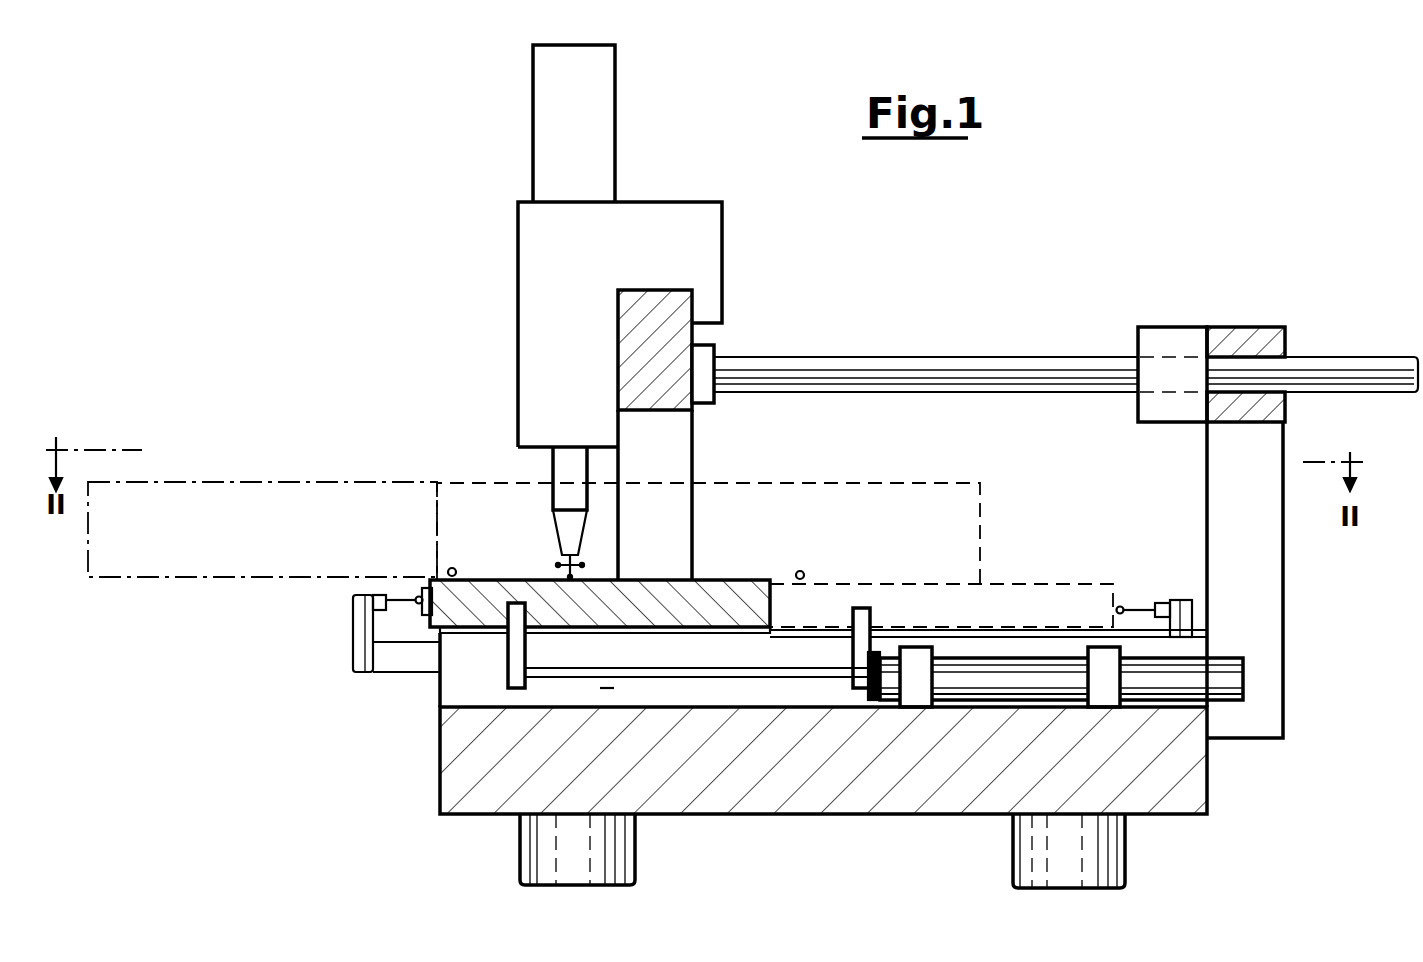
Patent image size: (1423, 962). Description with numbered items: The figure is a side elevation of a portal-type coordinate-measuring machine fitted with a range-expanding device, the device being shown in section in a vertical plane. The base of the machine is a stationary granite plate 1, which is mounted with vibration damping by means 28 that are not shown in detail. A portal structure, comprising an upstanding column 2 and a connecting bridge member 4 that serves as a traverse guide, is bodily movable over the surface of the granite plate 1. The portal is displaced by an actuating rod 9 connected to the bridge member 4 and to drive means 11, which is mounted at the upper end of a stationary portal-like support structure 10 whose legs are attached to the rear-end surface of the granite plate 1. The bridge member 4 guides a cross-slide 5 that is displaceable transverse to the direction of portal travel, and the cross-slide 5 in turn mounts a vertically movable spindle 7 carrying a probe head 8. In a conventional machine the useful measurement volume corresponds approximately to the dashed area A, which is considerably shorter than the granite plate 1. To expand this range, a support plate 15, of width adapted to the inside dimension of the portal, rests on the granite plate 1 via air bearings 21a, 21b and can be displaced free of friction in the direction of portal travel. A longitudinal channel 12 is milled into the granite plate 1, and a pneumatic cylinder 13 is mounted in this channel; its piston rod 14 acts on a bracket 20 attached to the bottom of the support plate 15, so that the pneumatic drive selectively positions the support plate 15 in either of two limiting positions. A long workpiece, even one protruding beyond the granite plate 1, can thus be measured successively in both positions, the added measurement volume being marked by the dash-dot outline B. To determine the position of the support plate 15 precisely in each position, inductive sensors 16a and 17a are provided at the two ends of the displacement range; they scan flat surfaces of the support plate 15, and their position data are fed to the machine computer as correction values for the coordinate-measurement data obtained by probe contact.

The granite plate 1 is at (1192, 770).
The portal column 2 is at (672, 460).
The bridge member 4 is at (698, 338).
The cross-slide 5 is at (705, 256).
The spindle 7 is at (566, 468).
The probe head 8 is at (553, 540).
The actuating rod 9 is at (948, 372).
The support structure 10 is at (1257, 575).
The drive means 11 is at (1162, 410).
The longitudinal channel 12 is at (608, 690).
The pneumatic cylinder 13 is at (1245, 686).
The piston rod 14 is at (600, 676).
The support plate 15 is at (716, 598).
The inductive sensor 16a is at (353, 633).
The inductive sensor 17a is at (1178, 600).
The bracket 20 is at (516, 655).
The air bearing 21a is at (465, 635).
The air bearing 21b is at (728, 632).
The vibration damping means 28 is at (636, 880).
The measurement volume area A is at (975, 576).
The added measurement volume B is at (357, 500).